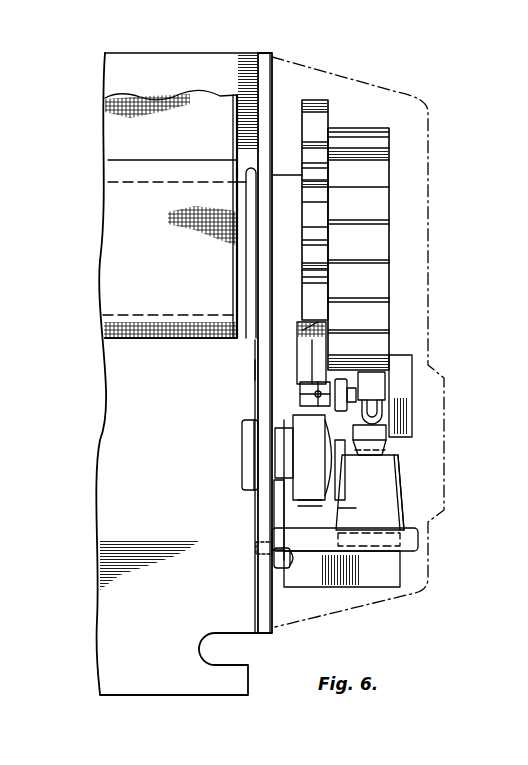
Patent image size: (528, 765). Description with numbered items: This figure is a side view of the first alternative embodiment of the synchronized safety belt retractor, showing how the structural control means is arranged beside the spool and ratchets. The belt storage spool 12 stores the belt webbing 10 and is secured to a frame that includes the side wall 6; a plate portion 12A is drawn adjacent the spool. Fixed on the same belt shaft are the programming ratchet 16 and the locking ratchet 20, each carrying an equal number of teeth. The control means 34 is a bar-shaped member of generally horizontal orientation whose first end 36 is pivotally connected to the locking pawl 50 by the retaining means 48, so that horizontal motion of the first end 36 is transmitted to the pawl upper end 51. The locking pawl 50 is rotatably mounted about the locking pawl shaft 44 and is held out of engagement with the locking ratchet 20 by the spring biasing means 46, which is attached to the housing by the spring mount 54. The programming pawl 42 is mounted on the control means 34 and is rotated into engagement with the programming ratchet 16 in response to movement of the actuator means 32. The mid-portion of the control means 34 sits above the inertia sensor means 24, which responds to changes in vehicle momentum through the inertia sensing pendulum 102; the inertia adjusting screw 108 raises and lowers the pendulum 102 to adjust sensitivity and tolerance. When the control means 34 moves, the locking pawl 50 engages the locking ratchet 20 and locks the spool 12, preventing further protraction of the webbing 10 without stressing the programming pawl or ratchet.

The side wall 6 is at (140, 615).
The belt webbing 10 is at (142, 120).
The belt storage spool 12 is at (232, 263).
The plate portion 12A is at (268, 374).
The programming ratchet 16 is at (370, 140).
The locking ratchet 20 is at (318, 104).
The inertia sensor means 24 is at (428, 522).
The actuator means 32 is at (380, 410).
The control means 34 is at (400, 378).
The first end 36 is at (342, 395).
The programming pawl 42 is at (386, 388).
The locking pawl shaft 44 is at (245, 447).
The spring biasing means 46 is at (270, 500).
The retaining means 48 is at (272, 393).
The locking pawl 50 is at (308, 335).
The pawl upper end 51 is at (270, 347).
The spring mount 54 is at (258, 550).
The inertia sensing pendulum 102 is at (378, 483).
The inertia adjusting screw 108 is at (290, 565).